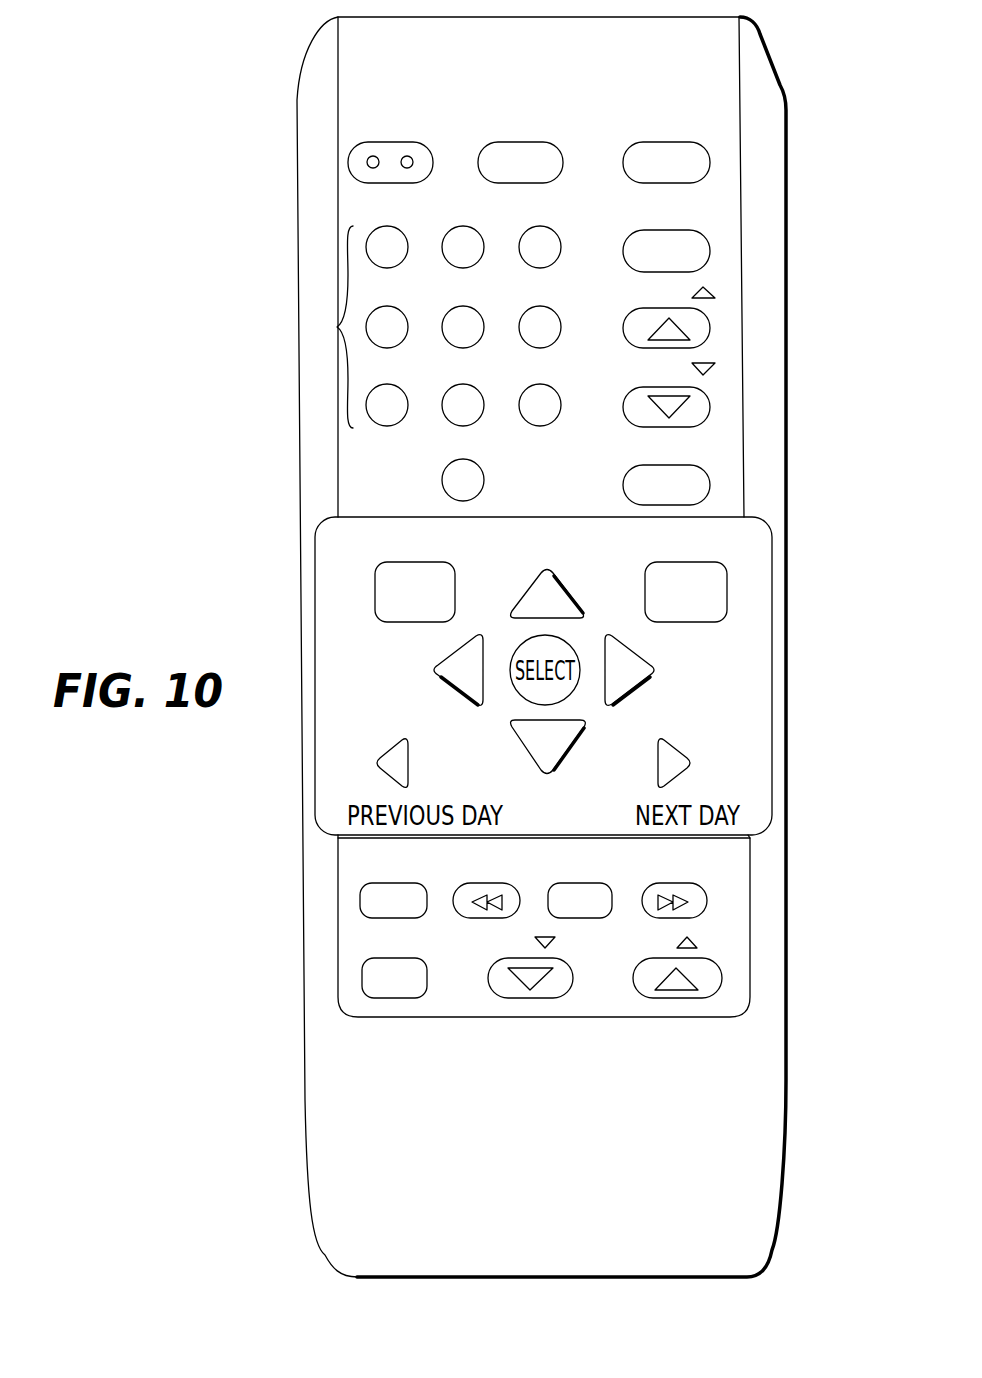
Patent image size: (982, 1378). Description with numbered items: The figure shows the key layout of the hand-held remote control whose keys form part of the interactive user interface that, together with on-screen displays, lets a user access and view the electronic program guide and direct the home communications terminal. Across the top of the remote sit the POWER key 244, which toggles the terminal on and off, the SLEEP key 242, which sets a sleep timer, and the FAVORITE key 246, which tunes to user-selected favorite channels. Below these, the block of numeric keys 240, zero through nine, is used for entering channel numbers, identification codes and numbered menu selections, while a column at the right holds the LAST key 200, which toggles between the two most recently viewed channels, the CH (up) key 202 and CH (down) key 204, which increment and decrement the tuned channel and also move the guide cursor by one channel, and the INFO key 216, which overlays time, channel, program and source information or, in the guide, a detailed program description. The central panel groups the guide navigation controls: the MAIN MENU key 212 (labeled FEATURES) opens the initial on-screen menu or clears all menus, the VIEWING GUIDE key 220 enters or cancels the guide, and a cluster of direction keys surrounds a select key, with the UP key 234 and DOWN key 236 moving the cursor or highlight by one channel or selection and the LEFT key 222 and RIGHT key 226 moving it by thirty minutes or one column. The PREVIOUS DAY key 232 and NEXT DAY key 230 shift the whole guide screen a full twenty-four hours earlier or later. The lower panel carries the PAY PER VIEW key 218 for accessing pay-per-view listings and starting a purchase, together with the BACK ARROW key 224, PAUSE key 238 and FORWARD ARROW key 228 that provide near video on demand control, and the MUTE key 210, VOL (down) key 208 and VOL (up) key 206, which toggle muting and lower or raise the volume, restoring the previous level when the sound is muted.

The LAST key 200 is at (705, 249).
The CH (up) key 202 is at (705, 326).
The CH (down) key 204 is at (705, 406).
The VOL (up) key 206 is at (716, 967).
The VOL (down) key 208 is at (495, 993).
The MUTE key 210 is at (362, 990).
The MAIN MENU key 212 is at (388, 577).
The INFO key 216 is at (705, 481).
The PAY PER VIEW key 218 is at (362, 907).
The VIEWING GUIDE key 220 is at (700, 598).
The LEFT key 222 is at (438, 683).
The BACK ARROW key 224 is at (460, 913).
The RIGHT key 226 is at (653, 682).
The FORWARD ARROW key 228 is at (707, 905).
The NEXT DAY key 230 is at (688, 767).
The PREVIOUS DAY key 232 is at (380, 772).
The UP key 234 is at (517, 600).
The DOWN key 236 is at (575, 753).
The PAUSE key 238 is at (578, 912).
The numeric keys 240 is at (337, 327).
The SLEEP key 242 is at (500, 155).
The POWER key 244 is at (350, 161).
The FAVORITE key 246 is at (705, 152).